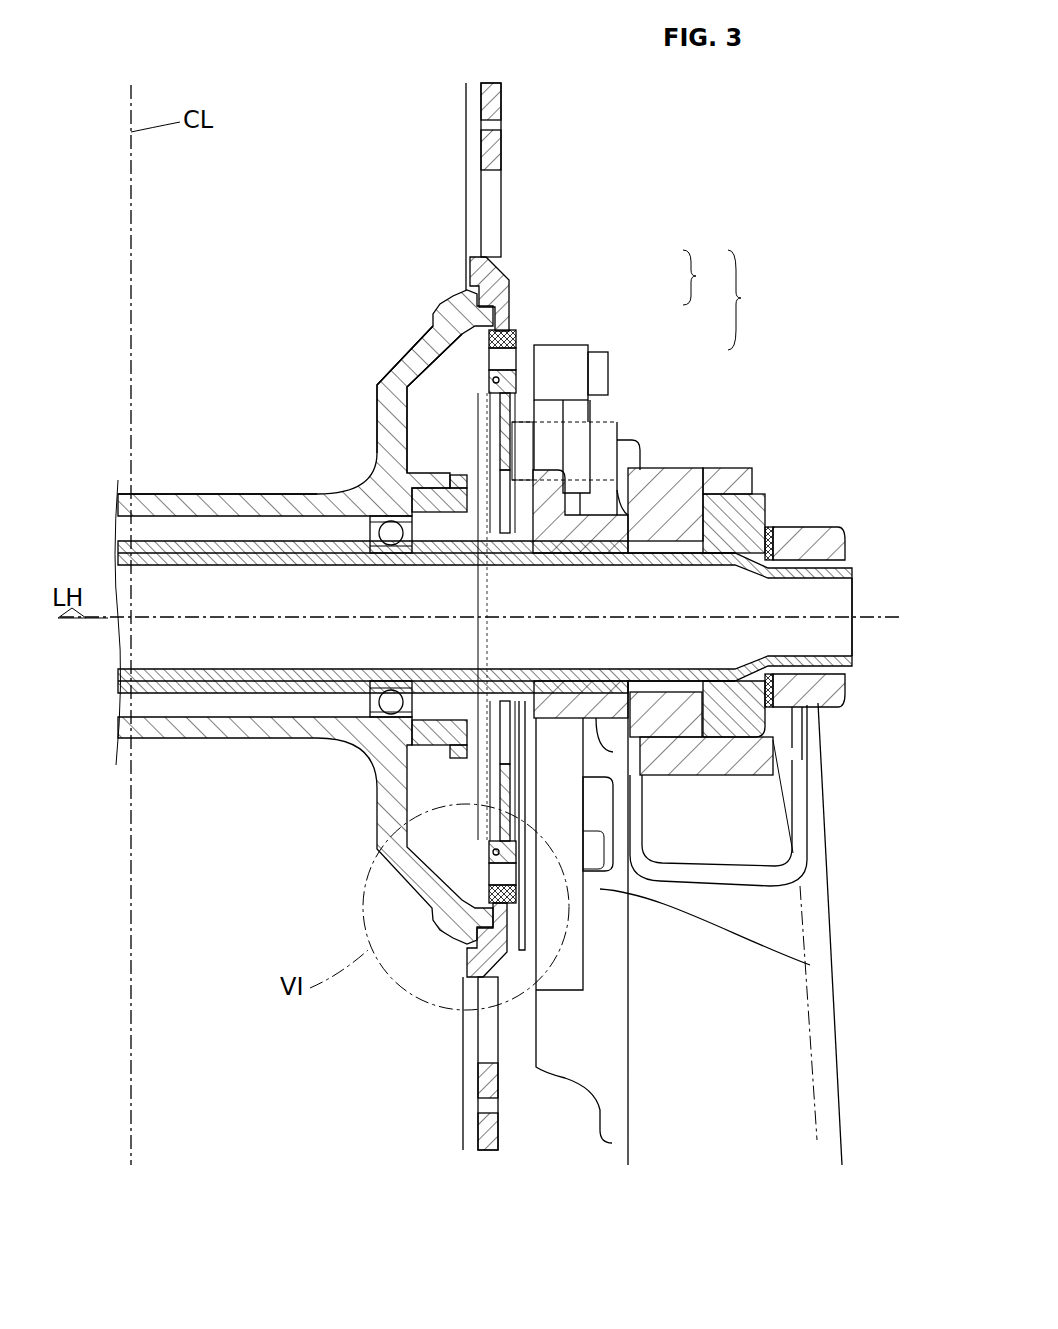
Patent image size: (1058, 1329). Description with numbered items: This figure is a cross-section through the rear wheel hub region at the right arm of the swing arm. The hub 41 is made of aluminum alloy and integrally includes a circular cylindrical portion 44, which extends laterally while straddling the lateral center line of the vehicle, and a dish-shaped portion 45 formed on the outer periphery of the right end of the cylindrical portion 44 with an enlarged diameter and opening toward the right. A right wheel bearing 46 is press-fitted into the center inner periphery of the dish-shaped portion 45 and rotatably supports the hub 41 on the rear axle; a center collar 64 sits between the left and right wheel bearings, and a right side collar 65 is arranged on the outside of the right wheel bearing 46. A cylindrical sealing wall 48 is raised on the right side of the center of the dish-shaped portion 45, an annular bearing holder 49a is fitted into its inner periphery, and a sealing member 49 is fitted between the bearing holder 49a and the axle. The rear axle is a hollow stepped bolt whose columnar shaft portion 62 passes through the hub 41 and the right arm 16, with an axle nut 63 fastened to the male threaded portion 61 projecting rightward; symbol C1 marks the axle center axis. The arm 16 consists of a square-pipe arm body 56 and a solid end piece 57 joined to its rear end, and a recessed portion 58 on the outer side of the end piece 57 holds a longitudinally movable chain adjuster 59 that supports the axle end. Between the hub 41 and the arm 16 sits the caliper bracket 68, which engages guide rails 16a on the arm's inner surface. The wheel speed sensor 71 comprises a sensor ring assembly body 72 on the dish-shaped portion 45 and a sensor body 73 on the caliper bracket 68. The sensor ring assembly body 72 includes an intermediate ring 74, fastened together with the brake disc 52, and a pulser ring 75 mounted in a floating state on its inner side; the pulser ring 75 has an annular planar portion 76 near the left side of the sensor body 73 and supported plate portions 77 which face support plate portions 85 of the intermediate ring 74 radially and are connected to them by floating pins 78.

The hub 41 is at (205, 490).
The circular cylindrical portion 44 is at (290, 493).
The dish-shaped portion 45 is at (402, 362).
The right wheel bearing 46 is at (388, 522).
The sealing wall 48 is at (470, 480).
The sealing member 49 is at (430, 470).
The bearing holder 49a is at (420, 425).
The brake disc 52 is at (503, 100).
The arm body 56 is at (815, 905).
The end piece 57 is at (770, 823).
The recessed portion 58 is at (775, 742).
The chain adjuster 59 is at (740, 712).
The male threaded portion 61 is at (830, 560).
The columnar shaft portion 62 is at (275, 700).
The axle nut 63 is at (790, 525).
The center collar 64 is at (185, 738).
The right side collar 65 is at (448, 745).
The caliper bracket 68 is at (600, 772).
The wheel speed sensor 71 is at (750, 300).
The sensor ring assembly body 72 is at (706, 277).
The sensor body 73 is at (616, 422).
The intermediate ring 74 is at (512, 292).
The pulser ring 75 is at (512, 412).
The planar portion 76 is at (500, 432).
The supported plate portion 77 is at (498, 383).
The floating pin 78 is at (516, 340).
The support plate portion 85 is at (495, 326).
The arm 16 is at (848, 1100).
The guide rail 16a is at (800, 962).
The center axis C1 is at (852, 615).